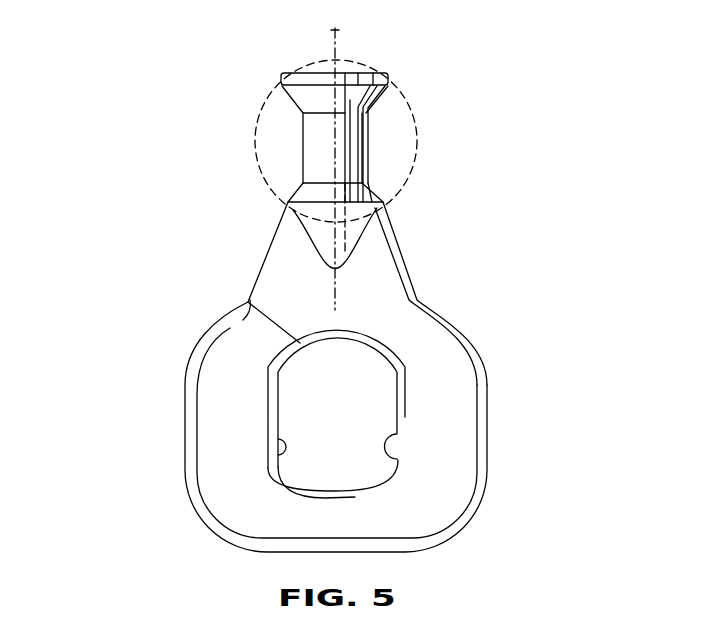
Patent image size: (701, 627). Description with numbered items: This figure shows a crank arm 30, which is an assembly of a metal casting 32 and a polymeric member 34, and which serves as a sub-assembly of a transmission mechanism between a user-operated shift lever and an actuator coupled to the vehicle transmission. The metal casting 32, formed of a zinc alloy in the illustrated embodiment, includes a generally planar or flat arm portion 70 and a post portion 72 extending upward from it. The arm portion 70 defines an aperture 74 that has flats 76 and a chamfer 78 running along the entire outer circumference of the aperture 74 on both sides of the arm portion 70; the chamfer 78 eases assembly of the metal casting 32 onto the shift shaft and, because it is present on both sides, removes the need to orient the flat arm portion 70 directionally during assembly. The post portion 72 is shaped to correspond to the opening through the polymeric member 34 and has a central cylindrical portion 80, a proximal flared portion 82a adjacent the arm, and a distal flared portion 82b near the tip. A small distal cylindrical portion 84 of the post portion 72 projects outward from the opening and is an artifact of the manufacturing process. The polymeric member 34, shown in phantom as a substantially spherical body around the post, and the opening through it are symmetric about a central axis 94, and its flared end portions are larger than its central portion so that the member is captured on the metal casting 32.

The crank arm 30 is at (120, 173).
The metal casting 32 is at (210, 477).
The polymeric member 34 is at (420, 138).
The arm portion 70 is at (457, 385).
The post portion 72 is at (317, 133).
The aperture 74 is at (300, 390).
The flats 76 is at (268, 462).
The chamfer 78 is at (247, 301).
The central cylindrical portion 80 is at (312, 163).
The proximal flared portion 82a is at (375, 188).
The distal flared portion 82b is at (373, 100).
The distal cylindrical portion 84 is at (388, 73).
The central axis 94 is at (333, 31).